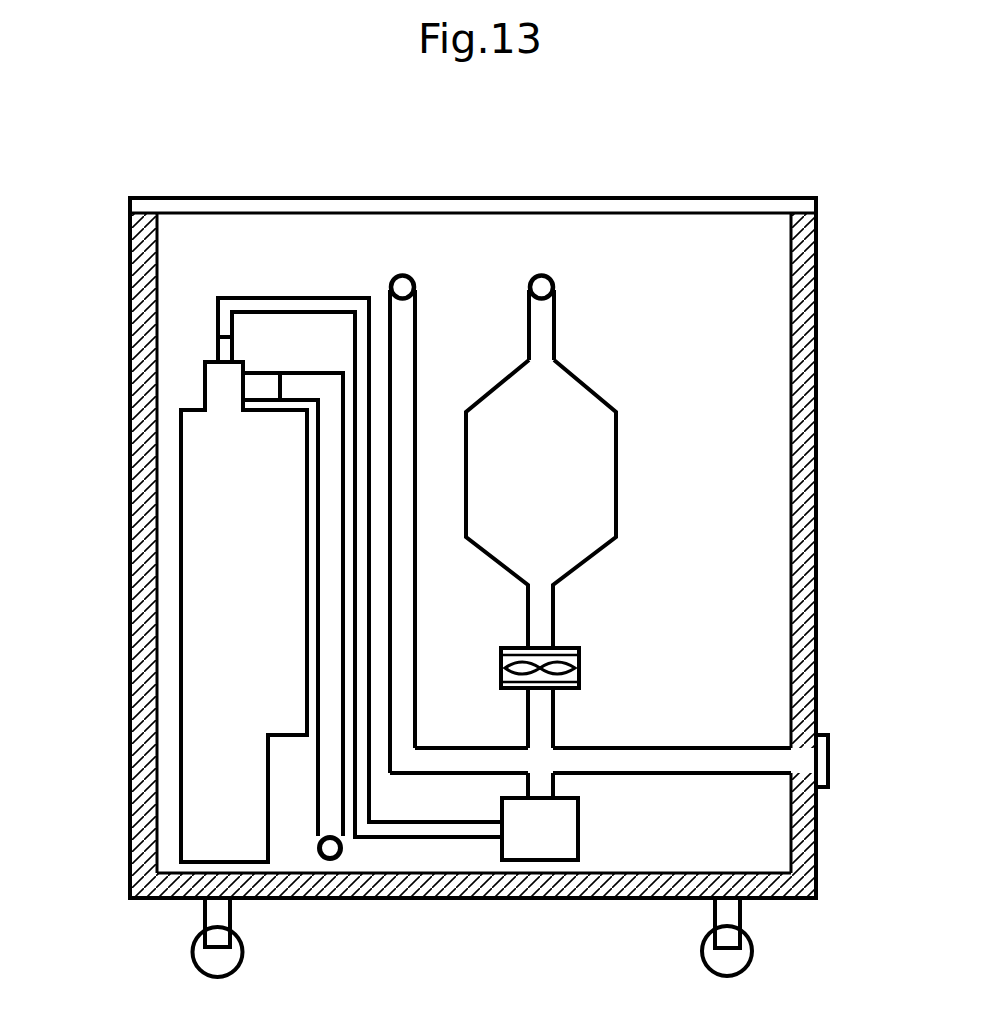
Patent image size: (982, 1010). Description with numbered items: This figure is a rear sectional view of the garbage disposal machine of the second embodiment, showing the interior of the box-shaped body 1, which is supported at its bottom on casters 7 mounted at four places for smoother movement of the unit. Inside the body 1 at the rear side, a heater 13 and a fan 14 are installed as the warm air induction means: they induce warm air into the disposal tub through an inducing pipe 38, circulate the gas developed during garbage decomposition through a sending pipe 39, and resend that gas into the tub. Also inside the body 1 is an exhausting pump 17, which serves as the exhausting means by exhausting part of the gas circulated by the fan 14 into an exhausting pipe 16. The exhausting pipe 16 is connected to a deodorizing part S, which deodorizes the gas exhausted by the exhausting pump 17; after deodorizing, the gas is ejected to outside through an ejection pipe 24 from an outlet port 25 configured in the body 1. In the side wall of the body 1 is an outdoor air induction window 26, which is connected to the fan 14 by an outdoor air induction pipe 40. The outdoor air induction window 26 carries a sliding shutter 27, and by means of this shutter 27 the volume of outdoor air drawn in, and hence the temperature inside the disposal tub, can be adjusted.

The body 1 is at (800, 337).
The casters 7 is at (747, 940).
The deodorizing part S is at (243, 523).
The heater 13 is at (580, 487).
The fan 14 is at (578, 673).
The exhausting pipe 16 is at (257, 298).
The exhausting pump 17 is at (565, 837).
The ejection pipe 24 is at (315, 800).
The outlet port 25 is at (332, 848).
The outdoor air induction window 26 is at (802, 760).
The shutter 27 is at (828, 757).
The inducing pipe 38 is at (540, 337).
The sending pipe 39 is at (403, 348).
The outdoor air induction pipe 40 is at (615, 760).